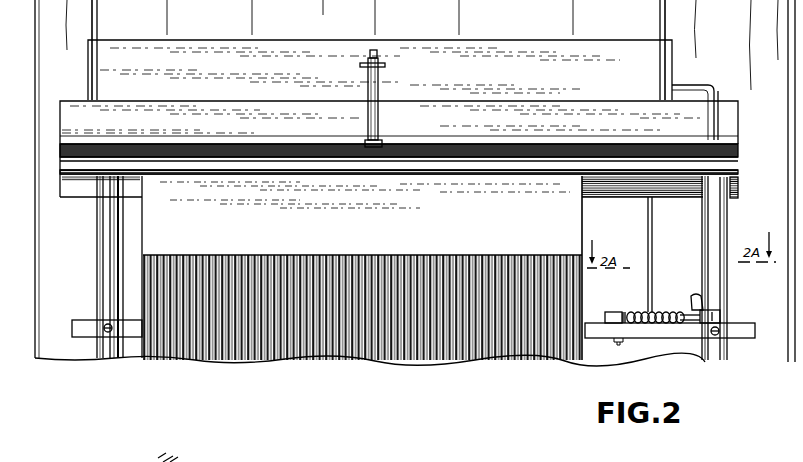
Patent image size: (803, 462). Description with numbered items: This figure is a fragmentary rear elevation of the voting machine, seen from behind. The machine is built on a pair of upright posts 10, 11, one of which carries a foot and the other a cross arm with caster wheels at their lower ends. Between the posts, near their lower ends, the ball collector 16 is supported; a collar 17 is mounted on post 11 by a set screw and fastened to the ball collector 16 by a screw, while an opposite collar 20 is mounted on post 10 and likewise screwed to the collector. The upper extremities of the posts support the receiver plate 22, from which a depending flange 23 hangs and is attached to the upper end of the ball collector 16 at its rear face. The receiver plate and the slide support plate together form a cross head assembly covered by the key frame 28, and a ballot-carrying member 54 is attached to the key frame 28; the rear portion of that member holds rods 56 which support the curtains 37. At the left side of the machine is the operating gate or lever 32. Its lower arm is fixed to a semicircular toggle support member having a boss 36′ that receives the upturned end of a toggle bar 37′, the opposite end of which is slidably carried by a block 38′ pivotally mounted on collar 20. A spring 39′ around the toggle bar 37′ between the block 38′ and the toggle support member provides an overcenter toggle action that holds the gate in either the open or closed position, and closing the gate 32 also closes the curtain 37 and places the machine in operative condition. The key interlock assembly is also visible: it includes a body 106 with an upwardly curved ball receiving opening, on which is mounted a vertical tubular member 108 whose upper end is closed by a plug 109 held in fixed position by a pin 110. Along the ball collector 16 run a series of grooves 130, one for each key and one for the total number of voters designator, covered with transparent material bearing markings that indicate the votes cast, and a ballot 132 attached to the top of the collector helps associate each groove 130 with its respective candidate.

The upright post 10 is at (724, 273).
The upright post 11 is at (106, 262).
The ball collector 16 is at (583, 295).
The collar 17 is at (80, 326).
The collar 20 is at (752, 332).
The receiver plate 22 is at (738, 171).
The depending flange 23 is at (604, 190).
The key frame 28 is at (738, 151).
The operating gate or lever 32 is at (652, 227).
The boss 36′ is at (695, 296).
The curtain 37 is at (760, 344).
The toggle bar 37′ is at (710, 318).
The block 38′ is at (612, 312).
The spring 39′ is at (635, 316).
The ballot-carrying member 54 is at (512, 82).
The rods 56 is at (98, 66).
The body 106 is at (382, 140).
The tubular member 108 is at (379, 86).
The plug 109 is at (392, 36).
The pin 110 is at (360, 65).
The grooves 130 is at (356, 344).
The ballot 132 is at (582, 235).